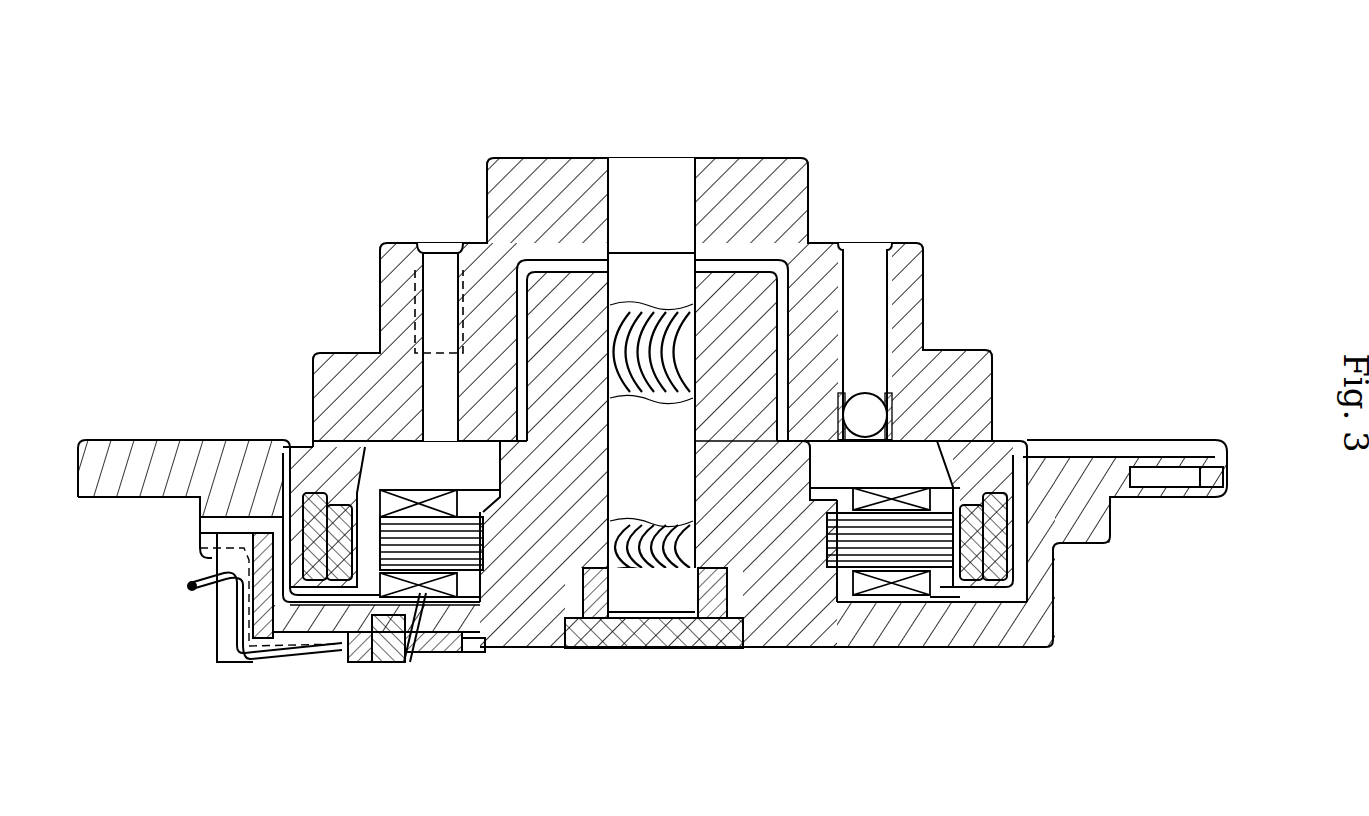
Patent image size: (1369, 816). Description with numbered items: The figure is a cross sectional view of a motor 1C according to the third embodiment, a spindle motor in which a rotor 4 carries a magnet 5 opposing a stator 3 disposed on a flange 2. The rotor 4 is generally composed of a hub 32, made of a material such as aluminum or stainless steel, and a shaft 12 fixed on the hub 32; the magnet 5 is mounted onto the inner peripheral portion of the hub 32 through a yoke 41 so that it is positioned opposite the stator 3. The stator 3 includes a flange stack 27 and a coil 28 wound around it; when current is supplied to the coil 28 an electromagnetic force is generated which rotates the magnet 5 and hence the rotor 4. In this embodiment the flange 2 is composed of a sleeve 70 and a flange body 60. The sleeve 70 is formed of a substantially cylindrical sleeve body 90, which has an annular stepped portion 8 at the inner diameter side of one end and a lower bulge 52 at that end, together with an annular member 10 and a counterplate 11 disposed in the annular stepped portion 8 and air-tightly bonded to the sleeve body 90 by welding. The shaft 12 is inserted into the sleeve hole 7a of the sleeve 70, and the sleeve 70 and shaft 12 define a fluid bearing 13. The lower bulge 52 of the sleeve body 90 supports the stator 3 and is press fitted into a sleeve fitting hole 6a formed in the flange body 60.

The motor 1C is at (1060, 148).
The flange 2 is at (790, 760).
The stator 3 is at (1065, 280).
The rotor 4 is at (772, 55).
The magnet 5 is at (340, 513).
The sleeve fitting hole 6a is at (858, 608).
The sleeve hole 7a is at (748, 560).
The annular stepped portion 8 is at (585, 605).
The annular member 10 is at (580, 628).
The counterplate 11 is at (690, 628).
The shaft 12 is at (660, 190).
The fluid bearing 13 is at (651, 598).
The flange stack 27 is at (840, 527).
The coil 28 is at (917, 500).
The hub 32 is at (743, 156).
The yoke 41 is at (313, 513).
The lower bulge 52 is at (822, 603).
The flange body 60 is at (990, 640).
The sleeve 70 is at (770, 670).
The sleeve body 90 is at (792, 603).